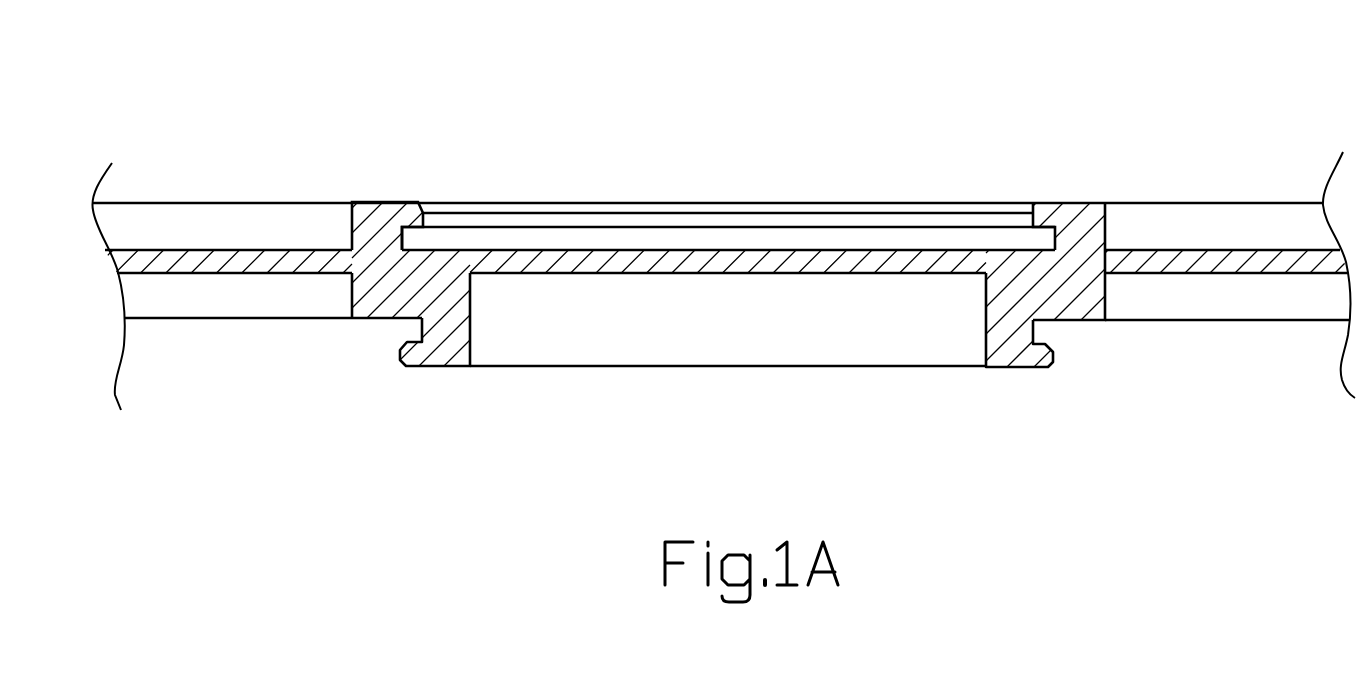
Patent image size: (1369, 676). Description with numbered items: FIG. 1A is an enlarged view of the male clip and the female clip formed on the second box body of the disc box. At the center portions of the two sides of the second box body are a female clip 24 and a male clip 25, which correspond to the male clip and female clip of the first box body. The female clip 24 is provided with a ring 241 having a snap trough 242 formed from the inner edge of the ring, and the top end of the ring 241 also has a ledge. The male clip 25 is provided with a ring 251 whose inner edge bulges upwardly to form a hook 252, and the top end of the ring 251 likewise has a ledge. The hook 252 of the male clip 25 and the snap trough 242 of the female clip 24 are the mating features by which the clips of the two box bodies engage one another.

The female clip 24 is at (385, 201).
The ring 241 is at (1078, 217).
The snap trough 242 is at (447, 232).
The male clip 25 is at (382, 318).
The ring 251 is at (1088, 316).
The hook 252 is at (398, 368).